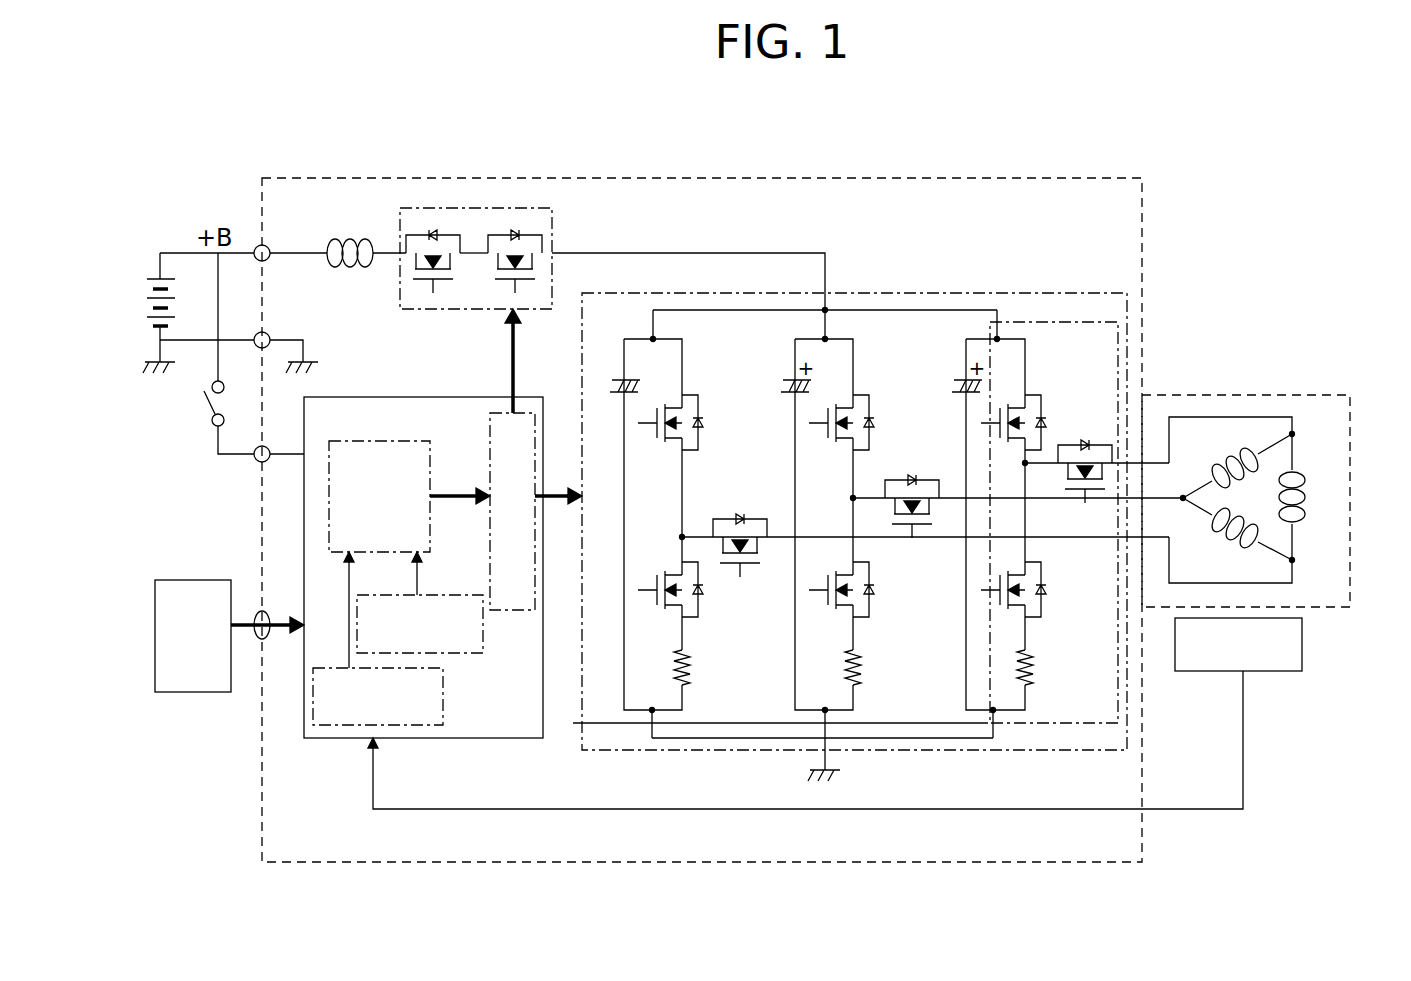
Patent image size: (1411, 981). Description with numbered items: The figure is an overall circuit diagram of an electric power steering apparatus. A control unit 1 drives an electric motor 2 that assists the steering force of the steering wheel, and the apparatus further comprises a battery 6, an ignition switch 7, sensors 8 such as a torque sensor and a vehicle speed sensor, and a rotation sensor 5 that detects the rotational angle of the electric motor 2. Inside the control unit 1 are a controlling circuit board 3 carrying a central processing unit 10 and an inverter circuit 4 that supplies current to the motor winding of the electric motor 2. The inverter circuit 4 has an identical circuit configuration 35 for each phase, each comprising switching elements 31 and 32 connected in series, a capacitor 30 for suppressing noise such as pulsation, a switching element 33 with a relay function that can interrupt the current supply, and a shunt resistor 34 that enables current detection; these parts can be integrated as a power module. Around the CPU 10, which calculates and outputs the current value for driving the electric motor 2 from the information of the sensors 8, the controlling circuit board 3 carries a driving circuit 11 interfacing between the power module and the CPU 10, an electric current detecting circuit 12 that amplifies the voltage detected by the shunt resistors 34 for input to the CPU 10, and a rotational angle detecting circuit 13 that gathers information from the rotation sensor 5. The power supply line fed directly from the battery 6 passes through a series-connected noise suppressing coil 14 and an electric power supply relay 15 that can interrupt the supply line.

The control unit 1 is at (1130, 178).
The electric motor 2 is at (1295, 395).
The controlling circuit board 3 is at (302, 722).
The inverter circuit 4 is at (890, 750).
The rotation sensor 5 is at (1275, 672).
The battery 6 is at (158, 278).
The ignition switch 7 is at (206, 415).
The sensors 8 is at (165, 692).
The central processing unit (CPU) 10 is at (329, 468).
The driving circuit 11 is at (512, 610).
The electric current detecting circuit 12 is at (462, 655).
The rotational angle detecting circuit 13 is at (340, 727).
The noise suppressing coil 14 is at (362, 239).
The electric power supply relay 15 is at (530, 208).
The capacitor 30 is at (614, 378).
The switching element 31 is at (700, 400).
The switching element 32 is at (700, 595).
The switching element 33 is at (742, 518).
The shunt resistor 34 is at (690, 666).
The circuit configuration 35 is at (1052, 723).